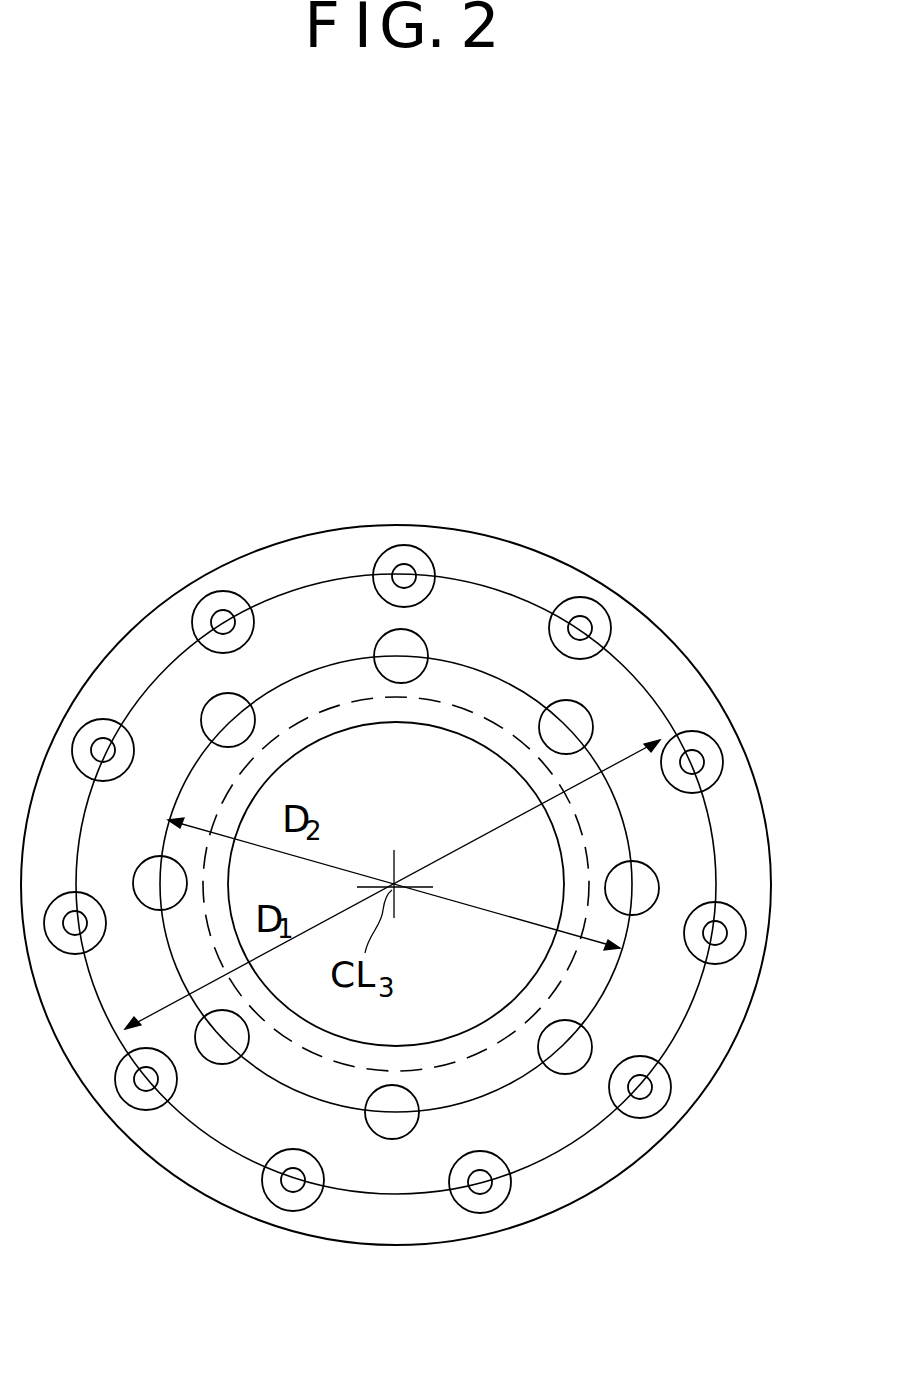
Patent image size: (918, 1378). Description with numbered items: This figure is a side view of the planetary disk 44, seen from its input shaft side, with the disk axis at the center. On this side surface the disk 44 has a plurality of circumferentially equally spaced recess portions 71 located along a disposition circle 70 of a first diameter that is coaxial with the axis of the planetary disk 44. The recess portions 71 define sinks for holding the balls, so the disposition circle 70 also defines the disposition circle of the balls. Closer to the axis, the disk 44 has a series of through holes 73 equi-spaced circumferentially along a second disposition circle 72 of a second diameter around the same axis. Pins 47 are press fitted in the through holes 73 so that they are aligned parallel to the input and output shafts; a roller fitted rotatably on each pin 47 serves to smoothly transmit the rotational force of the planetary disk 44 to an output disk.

The planetary disk 44 is at (545, 540).
The pin 47 is at (565, 1060).
The disposition circle 70 is at (713, 830).
The recess portion 71 is at (423, 550).
The disposition circle 72 is at (618, 977).
The through hole 73 is at (585, 1037).